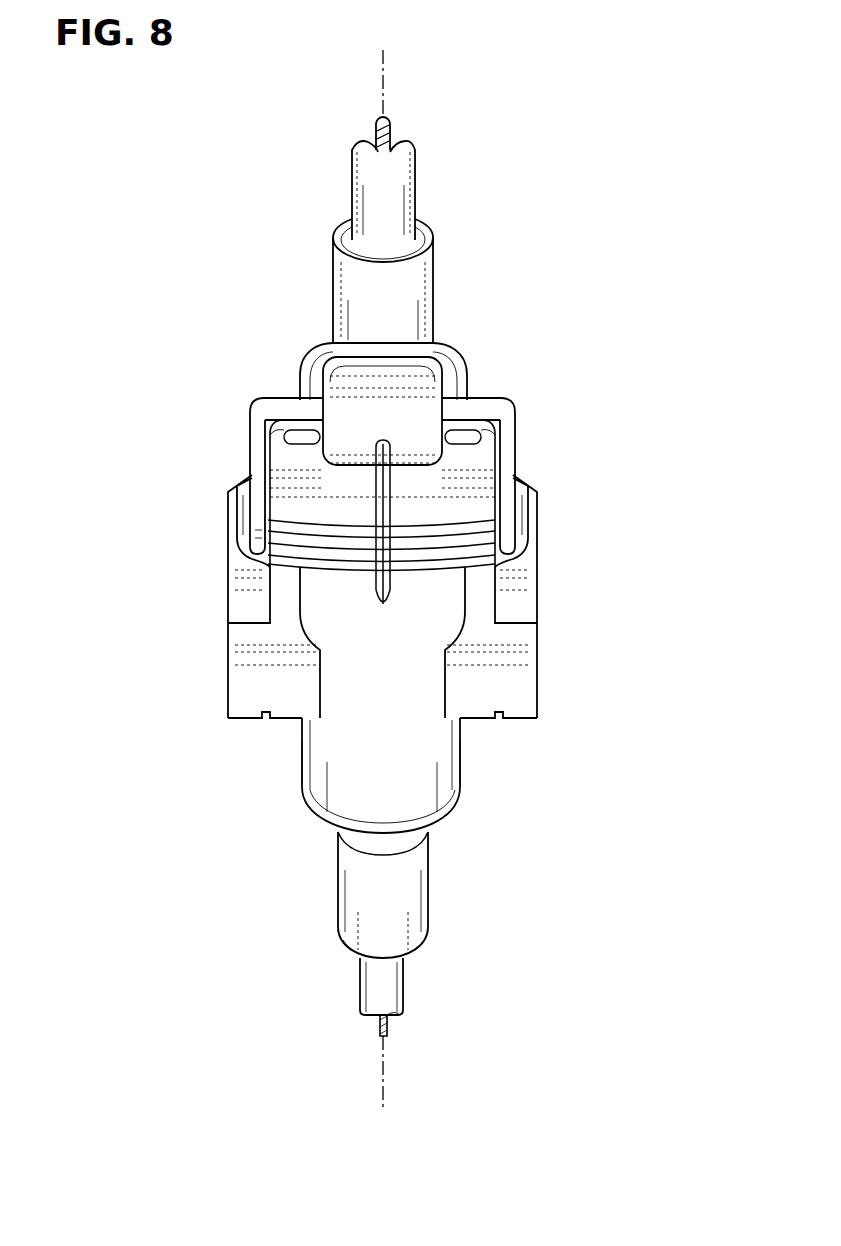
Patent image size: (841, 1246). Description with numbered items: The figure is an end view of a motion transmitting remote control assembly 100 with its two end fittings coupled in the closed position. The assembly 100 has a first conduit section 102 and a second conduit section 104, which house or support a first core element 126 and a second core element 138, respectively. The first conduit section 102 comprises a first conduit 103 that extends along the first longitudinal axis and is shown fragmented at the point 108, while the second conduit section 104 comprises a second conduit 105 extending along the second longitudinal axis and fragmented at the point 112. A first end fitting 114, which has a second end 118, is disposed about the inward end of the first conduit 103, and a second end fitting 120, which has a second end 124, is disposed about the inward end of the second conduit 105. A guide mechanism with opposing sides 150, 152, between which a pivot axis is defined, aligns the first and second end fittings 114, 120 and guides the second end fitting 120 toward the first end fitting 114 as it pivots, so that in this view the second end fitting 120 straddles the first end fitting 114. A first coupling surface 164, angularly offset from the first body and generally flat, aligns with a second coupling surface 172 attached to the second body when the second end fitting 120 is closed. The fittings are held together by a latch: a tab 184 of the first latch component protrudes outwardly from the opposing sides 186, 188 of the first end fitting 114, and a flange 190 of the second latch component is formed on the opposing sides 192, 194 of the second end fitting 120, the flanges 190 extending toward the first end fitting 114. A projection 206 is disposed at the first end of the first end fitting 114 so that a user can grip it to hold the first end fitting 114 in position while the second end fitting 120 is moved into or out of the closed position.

The motion transmitting remote control assembly 100 is at (573, 262).
The first conduit section 102 is at (423, 947).
The first conduit 103 is at (370, 977).
The second conduit section 104 is at (442, 233).
The second conduit 105 is at (373, 223).
The fragmentation point of first conduit 108 is at (390, 1022).
The fragmentation point of second conduit 112 is at (433, 233).
The first end fitting 114 is at (445, 773).
The second end of first end fitting 118 is at (345, 947).
The second end fitting 120 is at (445, 324).
The second end of second end fitting 124 is at (338, 233).
The first core element 126 is at (388, 1027).
The second core element 138 is at (393, 135).
The side of guide mechanism 150 is at (227, 539).
The side of guide mechanism 152 is at (533, 540).
The first coupling surface 164 is at (496, 566).
The second coupling surface 172 is at (496, 440).
The tab 184 is at (240, 482).
The side of first end fitting 186 is at (300, 745).
The side of first end fitting 188 is at (462, 770).
The flange 190 is at (252, 432).
The side of second end fitting 192 is at (268, 470).
The side of second end fitting 194 is at (505, 462).
The projection 206 is at (360, 405).